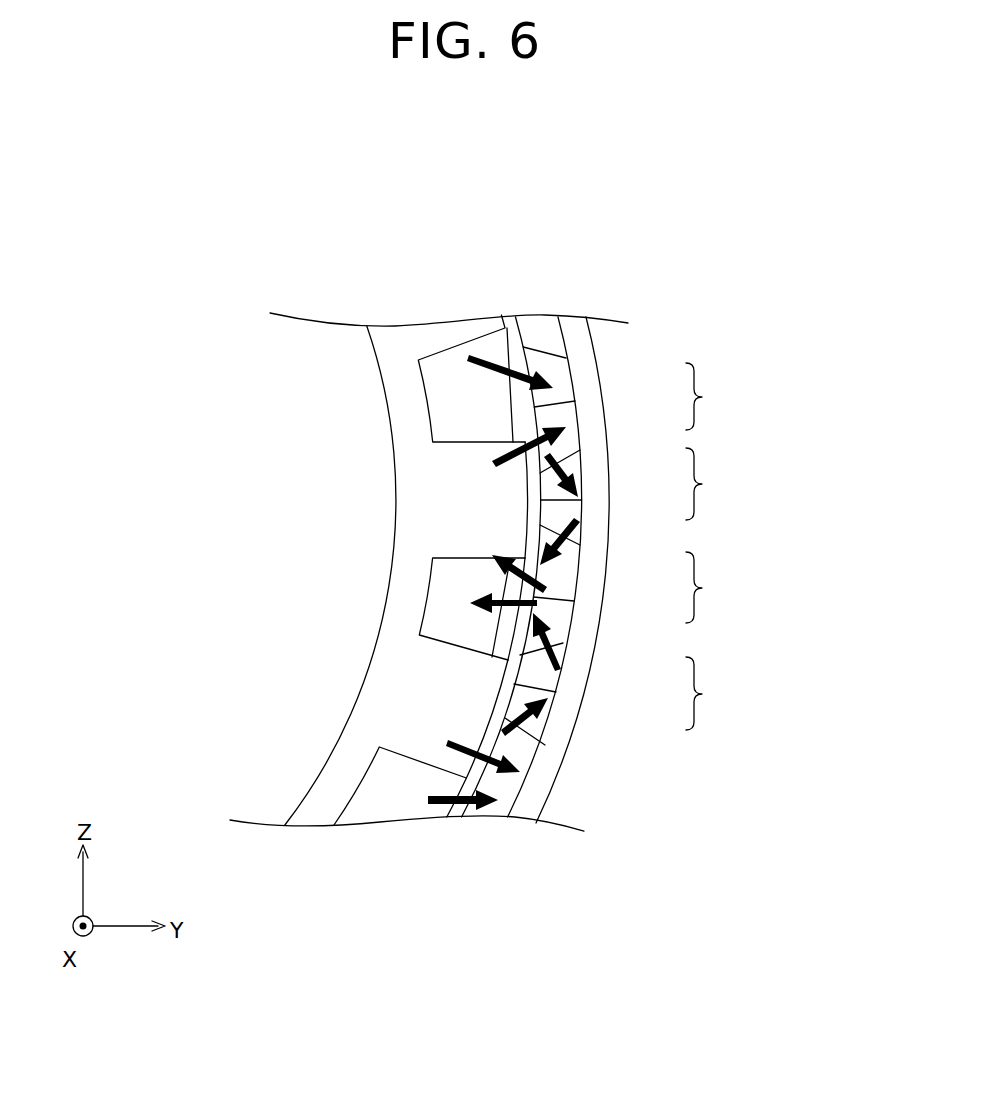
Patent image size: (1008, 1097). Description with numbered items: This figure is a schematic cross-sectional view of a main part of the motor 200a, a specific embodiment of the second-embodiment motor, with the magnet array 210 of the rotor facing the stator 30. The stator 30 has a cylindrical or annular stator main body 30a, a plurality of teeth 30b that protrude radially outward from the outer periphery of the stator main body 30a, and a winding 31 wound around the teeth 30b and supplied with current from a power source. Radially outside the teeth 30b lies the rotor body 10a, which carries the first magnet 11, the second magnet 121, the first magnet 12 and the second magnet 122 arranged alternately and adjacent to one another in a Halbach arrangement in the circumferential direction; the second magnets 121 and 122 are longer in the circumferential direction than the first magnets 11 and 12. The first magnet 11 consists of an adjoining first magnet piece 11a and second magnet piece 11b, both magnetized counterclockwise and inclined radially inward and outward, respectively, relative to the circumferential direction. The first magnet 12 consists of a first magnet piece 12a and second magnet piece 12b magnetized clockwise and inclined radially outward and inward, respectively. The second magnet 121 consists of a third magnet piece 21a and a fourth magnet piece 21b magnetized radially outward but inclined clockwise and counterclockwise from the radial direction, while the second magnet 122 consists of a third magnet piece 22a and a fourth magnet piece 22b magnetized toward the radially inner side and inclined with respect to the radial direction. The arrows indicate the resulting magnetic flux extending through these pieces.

The motor 200a is at (858, 143).
The magnet array 210 is at (718, 318).
The rotor body 10a is at (537, 803).
The first magnet 11 is at (614, 534).
The first magnet piece 11a is at (552, 680).
The second magnet piece 11b is at (558, 340).
The first magnet 12 is at (641, 505).
The first magnet piece 12a is at (577, 460).
The second magnet piece 12b is at (577, 507).
The second magnet 121 is at (588, 582).
The third magnet piece 21a is at (570, 380).
The fourth magnet piece 21b is at (570, 432).
The second magnet 122 is at (609, 591).
The third magnet piece 22a is at (572, 577).
The fourth magnet piece 22b is at (568, 618).
The stator 30 is at (315, 793).
The stator main body 30a is at (405, 550).
The teeth 30b is at (457, 475).
The winding 31 is at (447, 400).